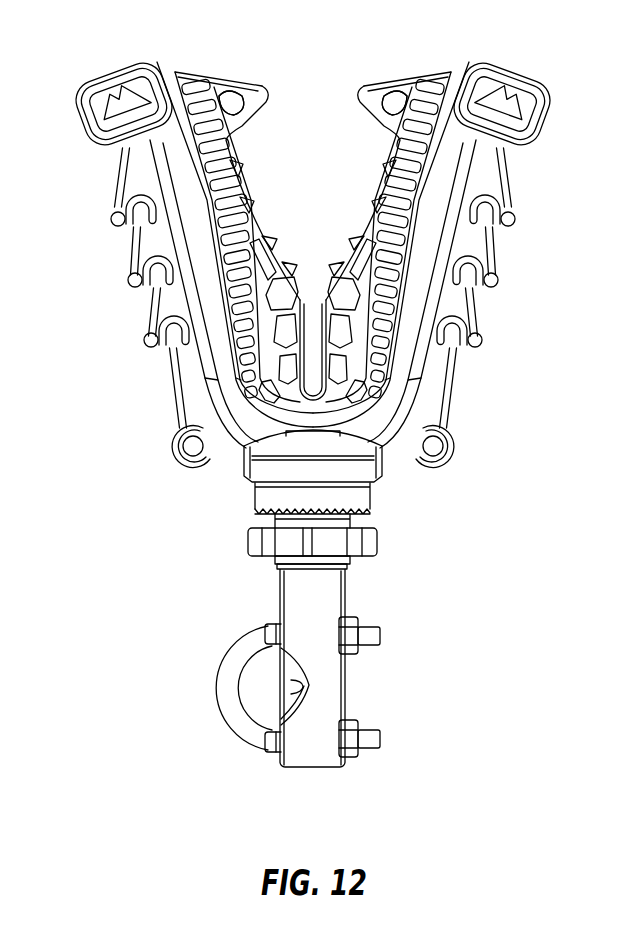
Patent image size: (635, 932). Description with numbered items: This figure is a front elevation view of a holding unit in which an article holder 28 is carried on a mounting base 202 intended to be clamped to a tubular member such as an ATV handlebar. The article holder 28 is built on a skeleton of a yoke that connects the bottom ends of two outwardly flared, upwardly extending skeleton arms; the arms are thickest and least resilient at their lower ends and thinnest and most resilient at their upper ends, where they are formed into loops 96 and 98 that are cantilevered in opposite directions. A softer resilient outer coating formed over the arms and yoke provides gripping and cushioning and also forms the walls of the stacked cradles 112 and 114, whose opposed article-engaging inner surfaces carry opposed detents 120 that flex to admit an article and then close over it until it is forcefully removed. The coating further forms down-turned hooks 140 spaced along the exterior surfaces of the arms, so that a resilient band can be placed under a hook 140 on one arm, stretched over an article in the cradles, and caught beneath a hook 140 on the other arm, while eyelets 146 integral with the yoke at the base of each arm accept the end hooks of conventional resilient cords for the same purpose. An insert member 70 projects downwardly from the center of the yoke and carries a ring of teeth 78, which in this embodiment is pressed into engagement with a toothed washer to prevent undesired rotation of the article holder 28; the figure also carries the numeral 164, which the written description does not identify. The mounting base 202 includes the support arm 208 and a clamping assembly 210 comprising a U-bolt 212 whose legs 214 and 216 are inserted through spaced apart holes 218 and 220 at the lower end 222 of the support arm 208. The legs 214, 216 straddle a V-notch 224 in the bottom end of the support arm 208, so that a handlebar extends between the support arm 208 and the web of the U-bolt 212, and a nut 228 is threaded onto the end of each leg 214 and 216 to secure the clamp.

The article holder 28 is at (302, 246).
The loop 96 is at (522, 64).
The loop 98 is at (90, 82).
The stacked cradle 112 is at (312, 296).
The stacked cradle 114 is at (298, 215).
The detents 120 is at (256, 84).
The down-turned hooks 140 is at (148, 329).
The eyelets 146 is at (176, 436).
The insert member 70 is at (262, 500).
The ring of teeth 78 is at (258, 512).
The nut 164 is at (250, 542).
The mounting base 202 is at (320, 659).
The support arm 208 is at (334, 592).
The clamping assembly 210 is at (214, 706).
The U-bolt 212 is at (279, 685).
The leg 214 is at (266, 736).
The leg 216 is at (266, 638).
The hole 218 is at (268, 746).
The hole 220 is at (267, 633).
The lower end 222 is at (330, 680).
The V-notch 224 is at (292, 690).
The nut 228 is at (355, 618).